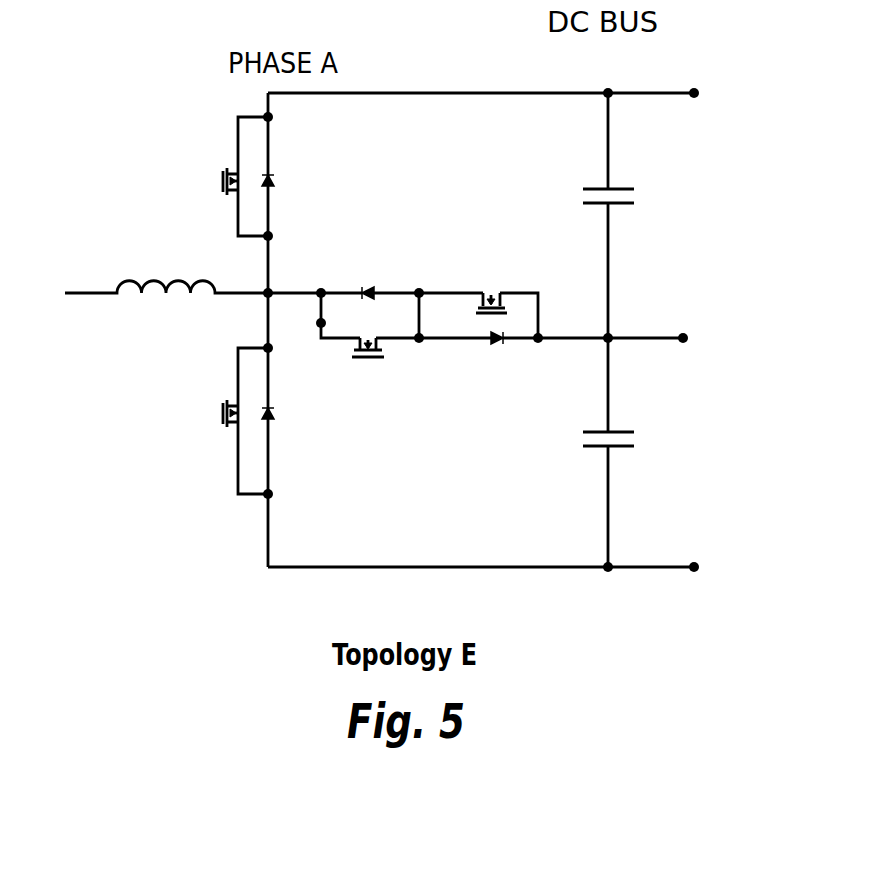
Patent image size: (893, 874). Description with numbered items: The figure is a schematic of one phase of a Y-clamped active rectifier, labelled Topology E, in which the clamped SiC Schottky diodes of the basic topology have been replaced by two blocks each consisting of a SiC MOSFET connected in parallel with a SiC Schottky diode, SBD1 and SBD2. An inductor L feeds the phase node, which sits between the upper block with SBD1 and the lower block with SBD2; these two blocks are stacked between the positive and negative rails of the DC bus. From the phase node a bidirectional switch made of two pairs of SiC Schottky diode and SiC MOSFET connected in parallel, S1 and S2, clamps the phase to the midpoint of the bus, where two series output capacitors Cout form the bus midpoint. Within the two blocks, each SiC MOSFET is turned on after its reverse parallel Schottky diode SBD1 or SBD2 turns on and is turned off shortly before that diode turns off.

The inductor L is at (193, 264).
The SiC Schottky diode SBD1 is at (285, 176).
The SiC Schottky diode SBD2 is at (291, 421).
The pair of SiC Schottky diode and SiC MOSFET S1 is at (478, 288).
The pair of SiC Schottky diode and SiC MOSFET S2 is at (370, 295).
The output capacitor Cout is at (661, 330).